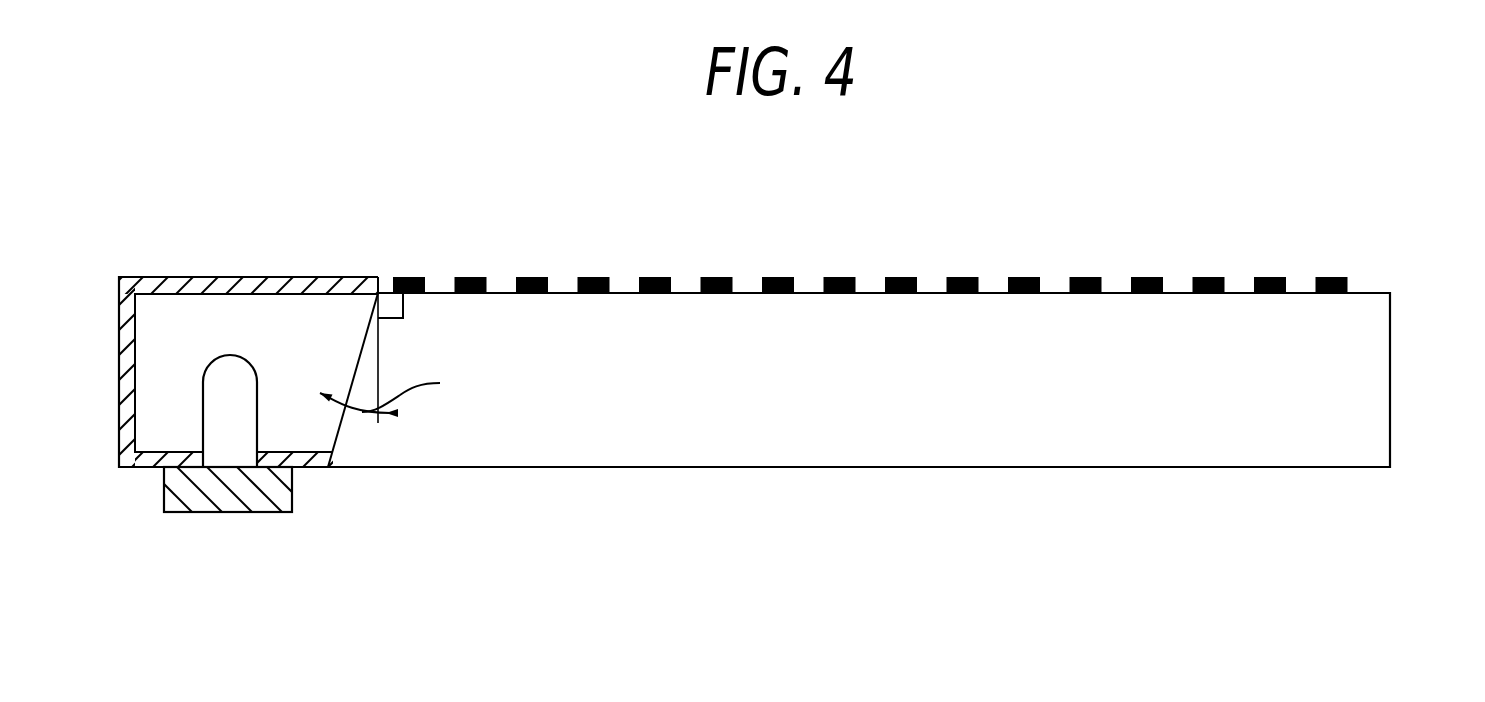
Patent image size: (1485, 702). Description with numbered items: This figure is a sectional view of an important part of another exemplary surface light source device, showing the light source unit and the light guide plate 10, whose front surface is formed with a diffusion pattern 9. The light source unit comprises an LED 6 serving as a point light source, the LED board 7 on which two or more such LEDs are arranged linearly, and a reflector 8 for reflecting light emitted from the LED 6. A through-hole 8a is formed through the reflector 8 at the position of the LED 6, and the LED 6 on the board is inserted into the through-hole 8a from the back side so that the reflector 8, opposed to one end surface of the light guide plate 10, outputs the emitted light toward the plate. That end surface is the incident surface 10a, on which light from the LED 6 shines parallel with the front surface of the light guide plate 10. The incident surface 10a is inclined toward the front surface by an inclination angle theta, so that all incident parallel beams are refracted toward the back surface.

The LED 6 is at (219, 357).
The LED board 7 is at (216, 508).
The reflector 8 is at (234, 283).
The through-hole 8a is at (199, 445).
The diffusion pattern 9 is at (542, 278).
The light guide plate 10 is at (1367, 292).
The incident surface 10a is at (357, 358).